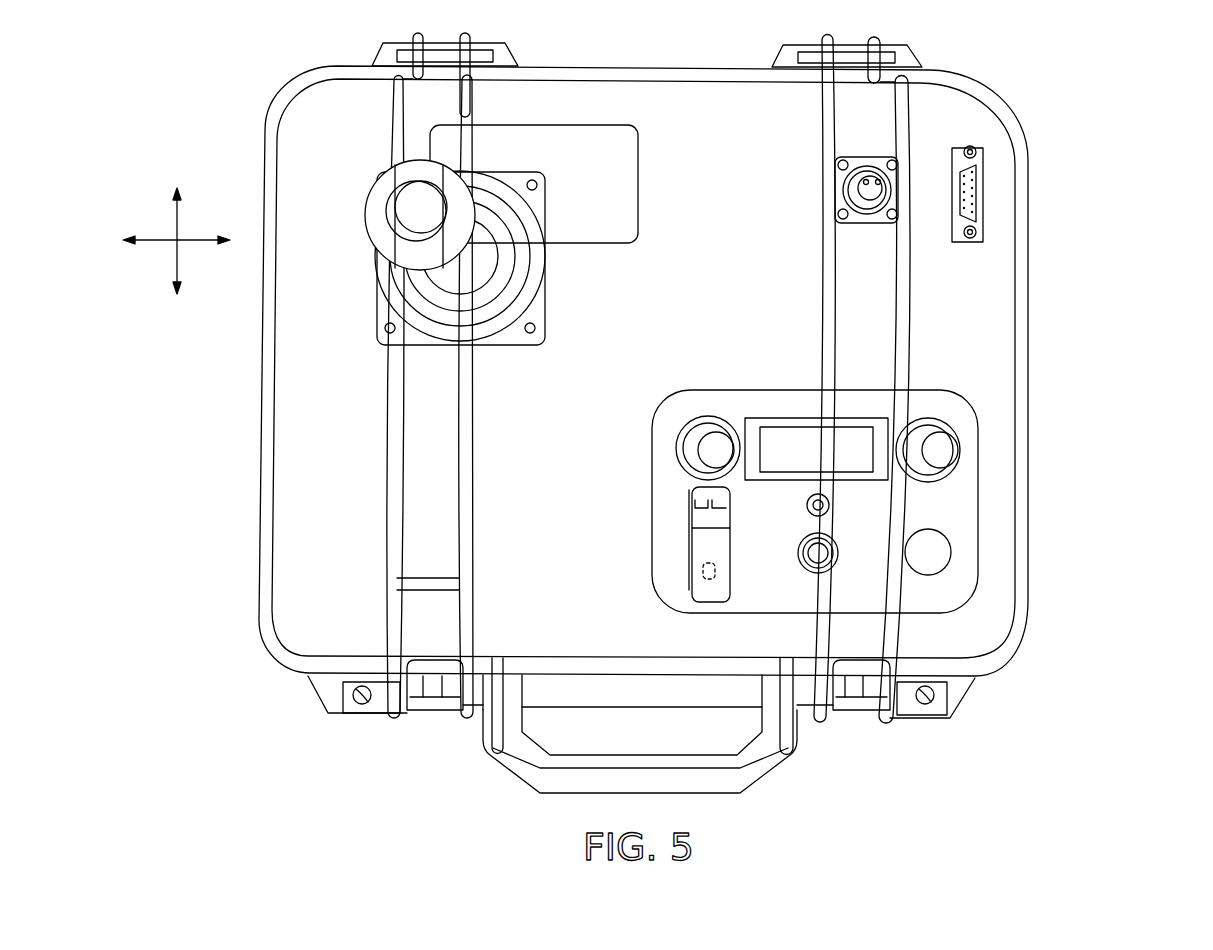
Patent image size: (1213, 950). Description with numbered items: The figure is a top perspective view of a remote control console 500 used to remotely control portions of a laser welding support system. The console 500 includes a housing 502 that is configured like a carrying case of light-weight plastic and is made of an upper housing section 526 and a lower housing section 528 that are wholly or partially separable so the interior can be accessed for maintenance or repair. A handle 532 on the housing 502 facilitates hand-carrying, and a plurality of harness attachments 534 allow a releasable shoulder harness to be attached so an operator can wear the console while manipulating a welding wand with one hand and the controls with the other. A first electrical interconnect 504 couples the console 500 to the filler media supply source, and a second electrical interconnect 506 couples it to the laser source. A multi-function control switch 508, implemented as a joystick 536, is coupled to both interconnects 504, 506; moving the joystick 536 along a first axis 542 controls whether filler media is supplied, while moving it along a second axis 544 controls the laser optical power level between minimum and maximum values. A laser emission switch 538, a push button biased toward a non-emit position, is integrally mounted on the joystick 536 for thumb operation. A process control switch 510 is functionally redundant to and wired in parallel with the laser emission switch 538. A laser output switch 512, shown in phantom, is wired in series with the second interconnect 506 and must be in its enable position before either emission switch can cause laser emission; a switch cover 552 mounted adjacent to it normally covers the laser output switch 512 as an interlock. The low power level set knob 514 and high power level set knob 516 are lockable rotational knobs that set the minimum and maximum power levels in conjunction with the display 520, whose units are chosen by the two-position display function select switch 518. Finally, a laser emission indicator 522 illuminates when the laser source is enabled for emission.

The control console 500 is at (661, 423).
The housing 502 is at (583, 371).
The first electrical interconnect 504 is at (860, 195).
The second electrical interconnect 506 is at (985, 193).
The multi-function control switch 508 is at (471, 216).
The process control switch 510 is at (817, 550).
The laser output switch 512 is at (718, 570).
The low power level set knob 514 is at (705, 448).
The high power level set knob 516 is at (945, 445).
The display function select switch 518 is at (830, 505).
The display 520 is at (797, 435).
The laser emission indicator 522 is at (920, 566).
The upper housing section 526 is at (727, 98).
The lower housing section 528 is at (678, 712).
The handle 532 is at (506, 768).
The harness attachments 534 is at (362, 704).
The joystick 536 is at (395, 293).
The laser emission switch 538 is at (397, 205).
The first axis 542 is at (180, 222).
The second axis 544 is at (150, 242).
The switch cover 552 is at (700, 520).